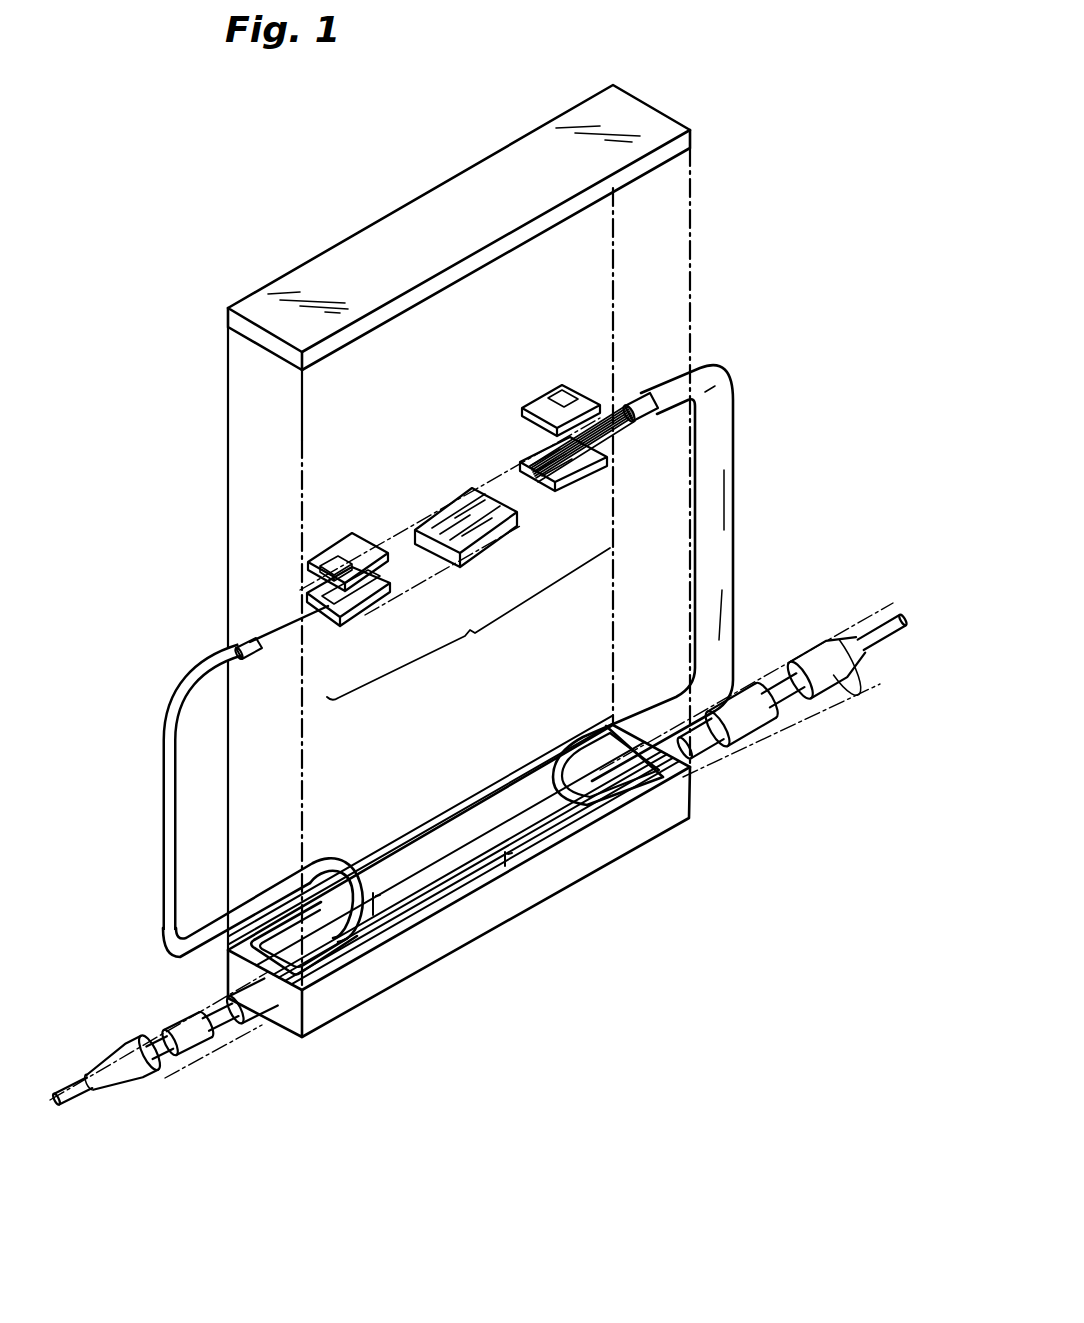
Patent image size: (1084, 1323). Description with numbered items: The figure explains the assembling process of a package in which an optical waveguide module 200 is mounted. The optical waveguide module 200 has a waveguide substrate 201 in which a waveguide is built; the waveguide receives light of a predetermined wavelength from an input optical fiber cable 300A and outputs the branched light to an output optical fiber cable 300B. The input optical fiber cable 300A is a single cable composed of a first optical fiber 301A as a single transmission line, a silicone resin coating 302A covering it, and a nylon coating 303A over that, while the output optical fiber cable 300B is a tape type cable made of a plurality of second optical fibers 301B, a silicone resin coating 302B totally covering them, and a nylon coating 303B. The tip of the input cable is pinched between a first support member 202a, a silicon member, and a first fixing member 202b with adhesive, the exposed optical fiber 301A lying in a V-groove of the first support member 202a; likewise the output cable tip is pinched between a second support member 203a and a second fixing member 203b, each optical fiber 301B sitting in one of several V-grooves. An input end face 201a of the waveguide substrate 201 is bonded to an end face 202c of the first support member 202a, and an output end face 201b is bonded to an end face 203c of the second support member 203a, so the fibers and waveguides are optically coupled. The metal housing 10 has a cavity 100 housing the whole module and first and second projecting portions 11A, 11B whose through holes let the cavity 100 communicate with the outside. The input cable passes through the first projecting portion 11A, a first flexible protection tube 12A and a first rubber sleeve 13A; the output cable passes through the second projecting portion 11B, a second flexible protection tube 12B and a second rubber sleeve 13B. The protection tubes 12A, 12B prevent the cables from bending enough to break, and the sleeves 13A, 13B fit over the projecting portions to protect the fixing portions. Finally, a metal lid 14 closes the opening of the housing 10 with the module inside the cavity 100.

The housing 10 is at (487, 917).
The cavity 100 is at (513, 840).
The first projecting portion 11A is at (268, 1000).
The second projecting portion 11B is at (697, 768).
The first flexible protection tube 12A is at (197, 1030).
The second flexible protection tube 12B is at (752, 718).
The first rubber sleeve 13A is at (123, 1088).
The second rubber sleeve 13B is at (840, 697).
The metal lid 14 is at (400, 232).
The optical waveguide module 200 is at (455, 559).
The waveguide substrate 201 is at (440, 518).
The input end face 201a is at (445, 556).
The output end face 201b is at (517, 508).
The first support member 202a is at (352, 612).
The first fixing member 202b is at (352, 543).
The end face 202c is at (385, 590).
The second support member 203a is at (570, 470).
The second fixing member 203b is at (535, 402).
The end face 203c is at (511, 515).
The input optical fiber cable 300A is at (65, 1080).
The output optical fiber cable 300B is at (867, 621).
The first optical fiber 301A is at (282, 625).
The second optical fibers 301B is at (623, 436).
The silicone resin coating 302A is at (242, 637).
The silicone resin coating 302B is at (643, 397).
The nylon coating 303A is at (187, 690).
The nylon coating 303B is at (705, 372).